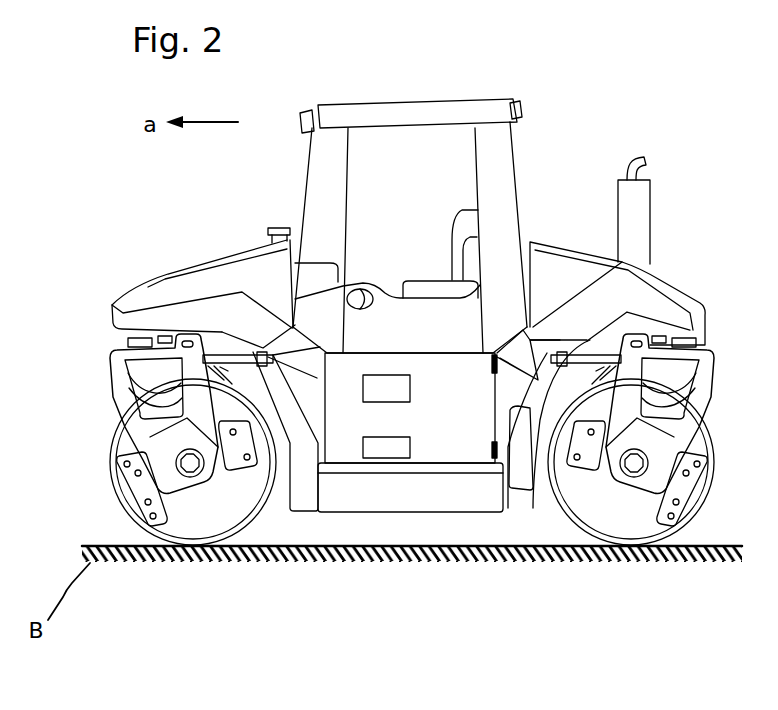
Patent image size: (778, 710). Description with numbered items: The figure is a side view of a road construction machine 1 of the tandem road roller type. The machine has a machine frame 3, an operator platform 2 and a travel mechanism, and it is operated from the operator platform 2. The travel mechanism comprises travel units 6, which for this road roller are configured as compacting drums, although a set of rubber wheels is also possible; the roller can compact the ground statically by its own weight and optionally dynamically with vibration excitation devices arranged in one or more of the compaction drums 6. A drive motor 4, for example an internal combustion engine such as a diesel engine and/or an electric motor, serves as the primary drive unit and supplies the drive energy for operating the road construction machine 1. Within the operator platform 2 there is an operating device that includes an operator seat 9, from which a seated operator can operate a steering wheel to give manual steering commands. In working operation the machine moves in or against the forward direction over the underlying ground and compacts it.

The road construction machine 1 is at (569, 143).
The operator platform 2 is at (424, 183).
The machine frame 3 is at (240, 280).
The drive motor 4 is at (595, 311).
The travel units 6 is at (167, 530).
The operator seat 9 is at (460, 267).